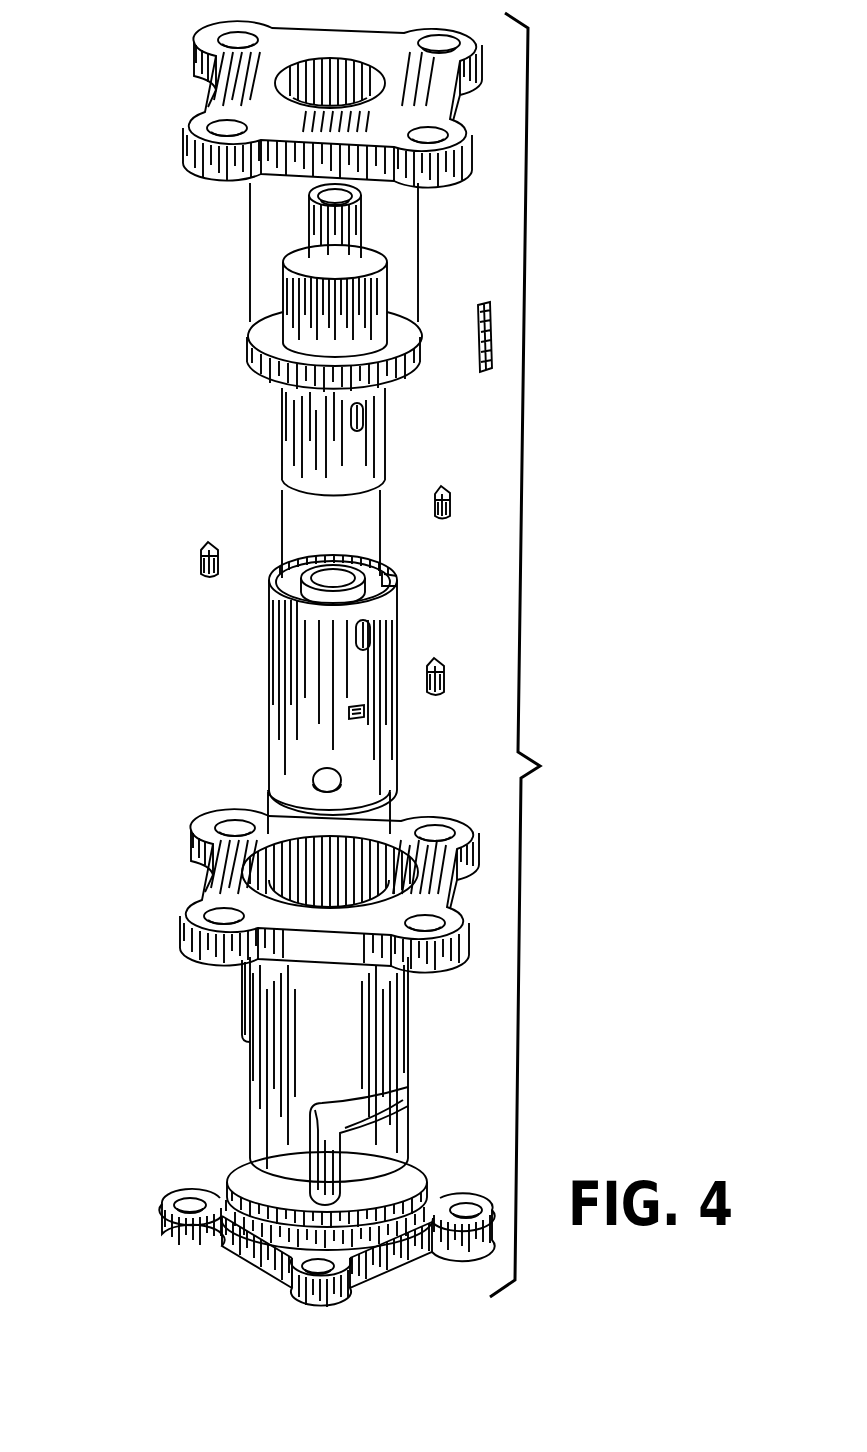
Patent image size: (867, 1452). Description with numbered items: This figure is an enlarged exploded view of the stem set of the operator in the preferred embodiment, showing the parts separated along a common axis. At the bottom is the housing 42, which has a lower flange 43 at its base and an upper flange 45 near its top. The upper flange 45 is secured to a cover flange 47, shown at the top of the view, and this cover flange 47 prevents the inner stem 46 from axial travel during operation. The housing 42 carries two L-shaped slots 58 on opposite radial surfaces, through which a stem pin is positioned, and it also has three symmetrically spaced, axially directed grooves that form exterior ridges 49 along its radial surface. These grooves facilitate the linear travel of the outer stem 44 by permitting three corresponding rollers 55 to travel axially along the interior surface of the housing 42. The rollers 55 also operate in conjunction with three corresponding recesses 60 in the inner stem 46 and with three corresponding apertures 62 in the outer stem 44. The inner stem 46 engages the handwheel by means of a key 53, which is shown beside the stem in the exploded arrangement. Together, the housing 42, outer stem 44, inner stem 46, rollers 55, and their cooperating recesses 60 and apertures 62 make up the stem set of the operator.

The housing 42 is at (262, 1096).
The lower flange 43 is at (195, 1216).
The outer stem 44 is at (288, 708).
The upper flange 45 is at (198, 913).
The inner stem 46 is at (268, 330).
The cover flange 47 is at (187, 141).
The exterior ridges 49 is at (246, 1003).
The key 53 is at (487, 372).
The rollers 55 is at (453, 494).
The L-shaped slots 58 is at (395, 1100).
The recesses 60 is at (350, 408).
The apertures 62 is at (345, 643).